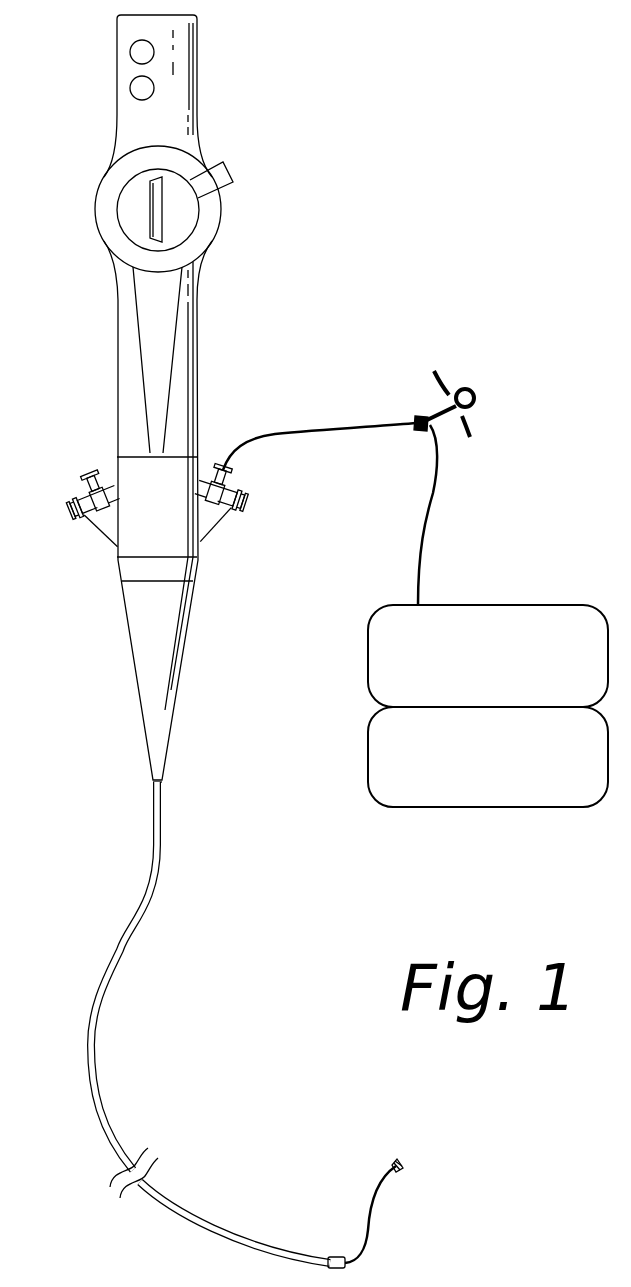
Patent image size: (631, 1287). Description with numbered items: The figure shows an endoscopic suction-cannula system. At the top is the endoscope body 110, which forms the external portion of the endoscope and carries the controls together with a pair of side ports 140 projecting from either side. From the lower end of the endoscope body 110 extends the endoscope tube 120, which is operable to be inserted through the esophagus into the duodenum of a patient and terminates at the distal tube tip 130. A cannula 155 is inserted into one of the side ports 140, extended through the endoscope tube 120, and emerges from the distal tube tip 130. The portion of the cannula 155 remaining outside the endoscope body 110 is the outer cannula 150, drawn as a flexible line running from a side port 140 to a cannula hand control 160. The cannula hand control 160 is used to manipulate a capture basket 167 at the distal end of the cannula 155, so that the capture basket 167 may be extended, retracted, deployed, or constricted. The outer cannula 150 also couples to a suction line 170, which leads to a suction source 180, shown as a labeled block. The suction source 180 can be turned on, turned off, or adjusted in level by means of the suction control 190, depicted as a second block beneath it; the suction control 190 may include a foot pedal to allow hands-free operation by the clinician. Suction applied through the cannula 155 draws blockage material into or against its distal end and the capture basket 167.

The endoscope body 110 is at (117, 85).
The endoscope tube 120 is at (108, 978).
The distal tube tip 130 is at (336, 1257).
The side ports 140 is at (102, 527).
The outer cannula 150 is at (295, 430).
The cannula 155 is at (370, 1230).
The cannula hand control 160 is at (440, 400).
The capture basket 167 is at (403, 1167).
The suction line 170 is at (422, 520).
The suction source 180 is at (488, 656).
The suction control 190 is at (488, 757).